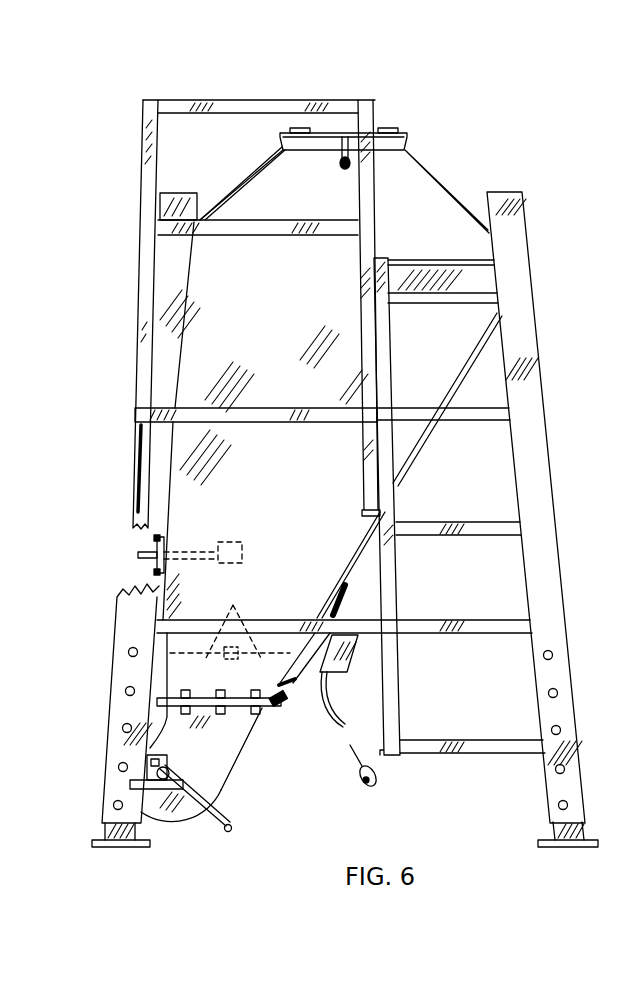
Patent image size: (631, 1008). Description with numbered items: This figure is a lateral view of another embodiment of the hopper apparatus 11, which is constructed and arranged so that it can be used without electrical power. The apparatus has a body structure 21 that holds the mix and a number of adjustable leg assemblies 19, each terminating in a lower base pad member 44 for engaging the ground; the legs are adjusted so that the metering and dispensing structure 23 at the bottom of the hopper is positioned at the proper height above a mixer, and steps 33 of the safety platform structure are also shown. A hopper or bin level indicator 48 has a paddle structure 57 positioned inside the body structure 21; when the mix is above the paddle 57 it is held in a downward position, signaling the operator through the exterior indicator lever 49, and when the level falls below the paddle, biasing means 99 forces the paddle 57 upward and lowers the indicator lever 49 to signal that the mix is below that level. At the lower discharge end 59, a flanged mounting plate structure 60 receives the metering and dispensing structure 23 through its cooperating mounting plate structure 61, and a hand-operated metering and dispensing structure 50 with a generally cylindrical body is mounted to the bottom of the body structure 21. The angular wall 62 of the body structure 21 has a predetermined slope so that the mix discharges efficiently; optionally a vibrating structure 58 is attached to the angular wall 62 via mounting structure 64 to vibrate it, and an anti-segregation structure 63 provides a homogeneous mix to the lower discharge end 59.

The hopper apparatus 11 is at (478, 135).
The adjustable leg assemblies 19 is at (548, 450).
The body structure 21 is at (279, 327).
The metering and dispensing structure 23 is at (223, 780).
The steps 33 is at (476, 620).
The lower base pad member 44 is at (585, 838).
The hopper or bin level indicator 48 is at (135, 545).
The exterior indicator lever 49 is at (138, 558).
The metering and dispensing structure 50 is at (190, 810).
The paddle structure 57 is at (242, 545).
The vibrating structure 58 is at (336, 674).
The lower discharge end 59 is at (160, 688).
The flanged mounting plate structure 60 is at (285, 703).
The cooperating mounting plate structure 61 is at (270, 708).
The angular wall 62 is at (424, 442).
The anti-segregation structure 63 is at (238, 609).
The mounting structure 64 is at (350, 588).
The biasing means 99 is at (176, 540).